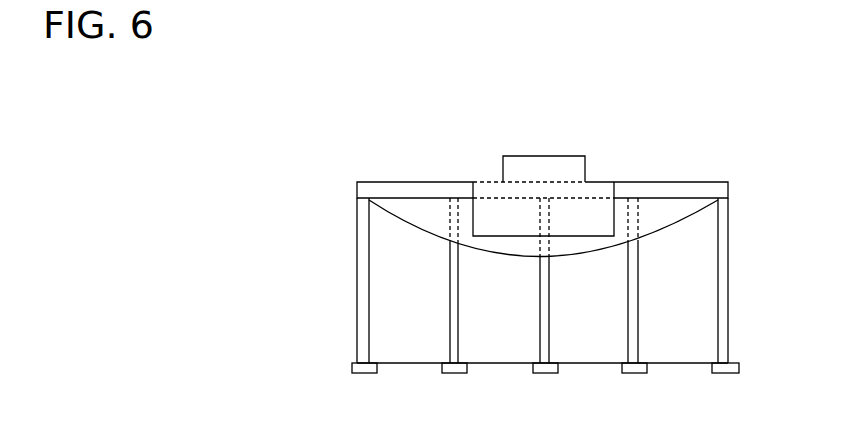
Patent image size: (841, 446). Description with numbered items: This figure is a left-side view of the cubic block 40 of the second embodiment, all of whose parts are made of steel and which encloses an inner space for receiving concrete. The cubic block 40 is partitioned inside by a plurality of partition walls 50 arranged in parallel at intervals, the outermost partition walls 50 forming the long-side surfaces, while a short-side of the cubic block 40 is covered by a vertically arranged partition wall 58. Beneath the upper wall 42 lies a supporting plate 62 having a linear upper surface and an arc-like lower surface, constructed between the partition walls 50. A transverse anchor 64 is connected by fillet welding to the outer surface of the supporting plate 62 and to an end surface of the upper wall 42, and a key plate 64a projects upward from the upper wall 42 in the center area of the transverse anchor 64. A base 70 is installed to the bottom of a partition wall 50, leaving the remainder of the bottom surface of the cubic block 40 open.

The cubic block 40 is at (461, 128).
The upper wall 42 is at (638, 182).
The partition wall 50 is at (357, 275).
The partition wall 58 is at (683, 345).
The supporting plate 62 is at (497, 251).
The transverse anchor 64 is at (598, 237).
The key plate 64a is at (557, 156).
The base 70 is at (637, 374).